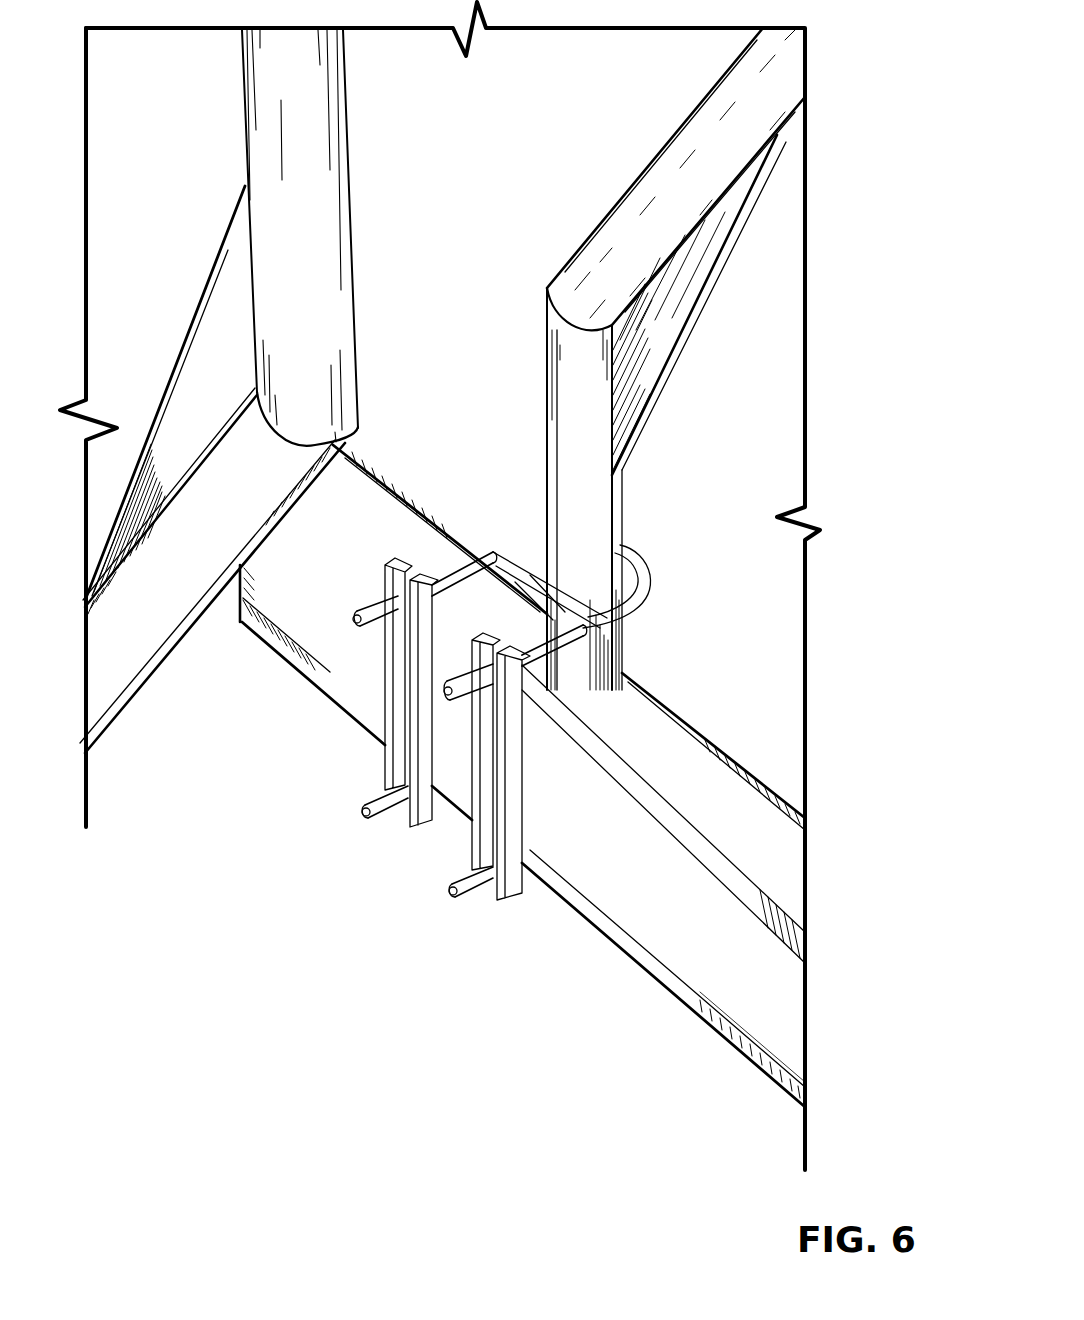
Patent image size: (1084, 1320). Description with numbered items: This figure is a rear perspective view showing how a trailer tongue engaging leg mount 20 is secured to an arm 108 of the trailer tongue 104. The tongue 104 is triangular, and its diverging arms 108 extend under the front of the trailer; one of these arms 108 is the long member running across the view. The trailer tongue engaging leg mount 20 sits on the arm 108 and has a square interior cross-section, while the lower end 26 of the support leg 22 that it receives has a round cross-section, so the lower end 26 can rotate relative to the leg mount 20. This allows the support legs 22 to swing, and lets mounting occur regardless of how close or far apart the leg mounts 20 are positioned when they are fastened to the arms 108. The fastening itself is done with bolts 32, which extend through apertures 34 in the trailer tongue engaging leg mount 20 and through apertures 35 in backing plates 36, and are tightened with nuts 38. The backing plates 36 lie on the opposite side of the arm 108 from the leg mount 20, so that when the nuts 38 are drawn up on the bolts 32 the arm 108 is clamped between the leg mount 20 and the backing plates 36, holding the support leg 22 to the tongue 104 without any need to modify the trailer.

The trailer tongue engaging leg mount 20 is at (640, 620).
The support leg 22 is at (705, 95).
The lower end 26 is at (622, 492).
The bolt 32 is at (356, 624).
The aperture 34 is at (540, 553).
The aperture 35 is at (362, 618).
The backing plate 36 is at (397, 575).
The nut 38 is at (418, 580).
The tongue 104 is at (682, 988).
The arm 108 is at (623, 805).